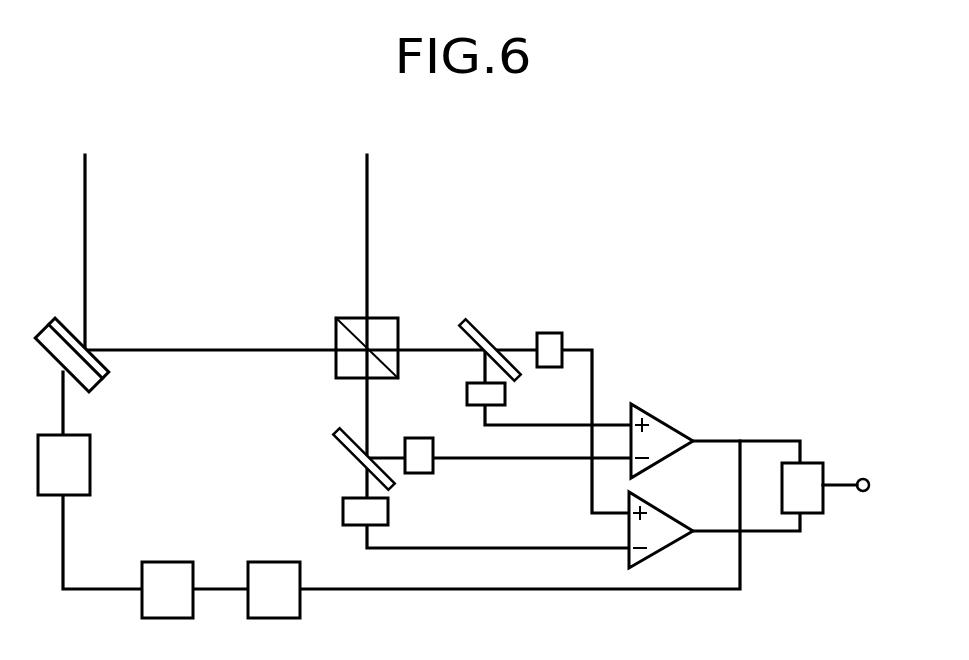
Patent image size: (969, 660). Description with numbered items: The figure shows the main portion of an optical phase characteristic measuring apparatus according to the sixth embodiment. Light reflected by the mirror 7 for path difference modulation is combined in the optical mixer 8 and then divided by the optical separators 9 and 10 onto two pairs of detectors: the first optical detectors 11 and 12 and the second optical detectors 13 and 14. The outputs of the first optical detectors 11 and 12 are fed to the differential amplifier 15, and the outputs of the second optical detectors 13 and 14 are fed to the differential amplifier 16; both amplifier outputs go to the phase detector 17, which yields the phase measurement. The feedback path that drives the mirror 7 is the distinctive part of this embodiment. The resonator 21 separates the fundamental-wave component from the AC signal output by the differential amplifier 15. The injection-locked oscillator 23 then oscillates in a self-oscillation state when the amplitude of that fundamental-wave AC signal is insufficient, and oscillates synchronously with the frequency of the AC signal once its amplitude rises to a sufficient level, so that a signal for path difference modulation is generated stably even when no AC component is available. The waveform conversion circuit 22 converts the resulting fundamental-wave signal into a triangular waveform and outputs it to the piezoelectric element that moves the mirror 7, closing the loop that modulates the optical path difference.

The mirror for path difference modulation 7 is at (50, 342).
The optical mixer 8 is at (353, 322).
The optical separator 9 is at (478, 332).
The optical separator 10 is at (337, 440).
The first optical detector 11 is at (470, 392).
The first optical detector 12 is at (428, 465).
The second optical detector 13 is at (553, 342).
The second optical detector 14 is at (348, 508).
The differential amplifier 15 is at (672, 438).
The differential amplifier 16 is at (668, 535).
The phase detector 17 is at (810, 470).
The resonator 21 is at (270, 572).
The waveform conversion circuit 22 is at (78, 465).
The injection-locked oscillator 23 is at (163, 572).